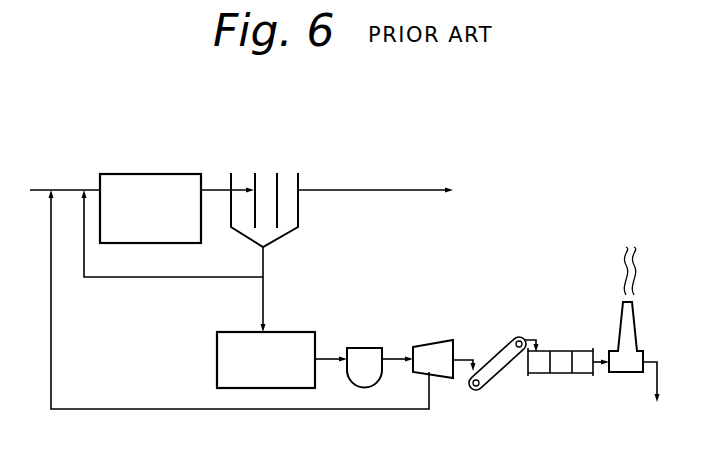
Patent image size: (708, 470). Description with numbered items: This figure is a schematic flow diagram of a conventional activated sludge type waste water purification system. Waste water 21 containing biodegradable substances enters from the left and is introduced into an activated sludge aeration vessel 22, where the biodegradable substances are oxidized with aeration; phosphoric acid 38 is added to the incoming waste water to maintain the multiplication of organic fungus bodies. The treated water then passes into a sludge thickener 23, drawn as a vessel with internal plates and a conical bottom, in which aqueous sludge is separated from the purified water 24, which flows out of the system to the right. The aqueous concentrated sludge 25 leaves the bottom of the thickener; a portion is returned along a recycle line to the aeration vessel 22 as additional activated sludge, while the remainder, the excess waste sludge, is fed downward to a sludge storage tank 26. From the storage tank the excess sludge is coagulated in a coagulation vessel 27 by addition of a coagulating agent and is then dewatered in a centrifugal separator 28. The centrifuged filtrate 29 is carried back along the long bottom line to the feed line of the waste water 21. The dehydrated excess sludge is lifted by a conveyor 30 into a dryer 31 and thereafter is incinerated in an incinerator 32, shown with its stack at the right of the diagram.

The waste water 21 is at (53, 192).
The activated sludge aeration vessel 22 is at (160, 174).
The sludge thickener 23 is at (265, 173).
The purified water 24 is at (375, 180).
The aqueous concentrated sludge 25 is at (264, 262).
The sludge storage tank 26 is at (297, 332).
The coagulation vessel 27 is at (364, 348).
The centrifugal separator 28 is at (435, 342).
The centrifuged filtrate 29 is at (158, 410).
The conveyor 30 is at (497, 380).
The dryer 31 is at (563, 374).
The incinerator 32 is at (636, 322).
The phosphoric acid 38 is at (68, 190).